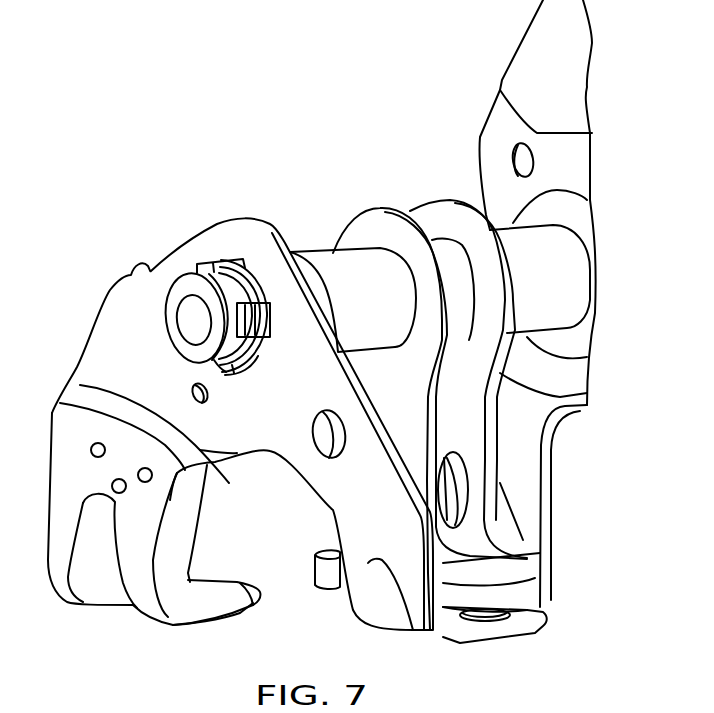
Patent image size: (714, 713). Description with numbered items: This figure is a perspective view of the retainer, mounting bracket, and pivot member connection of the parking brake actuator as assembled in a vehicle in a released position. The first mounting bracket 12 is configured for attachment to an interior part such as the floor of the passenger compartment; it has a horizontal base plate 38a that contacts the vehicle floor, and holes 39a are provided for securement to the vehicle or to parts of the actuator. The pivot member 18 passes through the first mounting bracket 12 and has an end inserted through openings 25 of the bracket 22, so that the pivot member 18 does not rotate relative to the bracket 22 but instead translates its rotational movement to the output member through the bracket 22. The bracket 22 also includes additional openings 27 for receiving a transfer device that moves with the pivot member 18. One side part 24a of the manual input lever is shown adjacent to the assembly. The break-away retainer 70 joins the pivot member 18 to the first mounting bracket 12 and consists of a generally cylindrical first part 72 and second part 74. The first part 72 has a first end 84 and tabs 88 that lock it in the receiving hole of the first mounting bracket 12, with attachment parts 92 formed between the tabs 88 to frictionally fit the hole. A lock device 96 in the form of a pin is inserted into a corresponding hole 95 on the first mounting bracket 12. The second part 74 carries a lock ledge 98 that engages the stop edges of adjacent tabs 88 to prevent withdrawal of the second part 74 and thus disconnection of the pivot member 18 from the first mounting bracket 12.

The first mounting bracket 12 is at (100, 305).
The pivot member 18 is at (568, 280).
The bracket 22 is at (427, 390).
The side part 24a is at (494, 122).
The openings 25 is at (378, 247).
The additional openings 27 is at (463, 465).
The horizontal base plate 38a is at (250, 600).
The holes 39a is at (500, 608).
The break-away retainer 70 is at (193, 258).
The first part 72 is at (243, 273).
The second part 74 is at (167, 328).
The first end 84 is at (313, 287).
The tabs 88 is at (187, 277).
The attachment parts 92 is at (230, 262).
The hole 95 is at (194, 399).
The lock device 96 is at (197, 372).
The lock ledge 98 is at (223, 370).